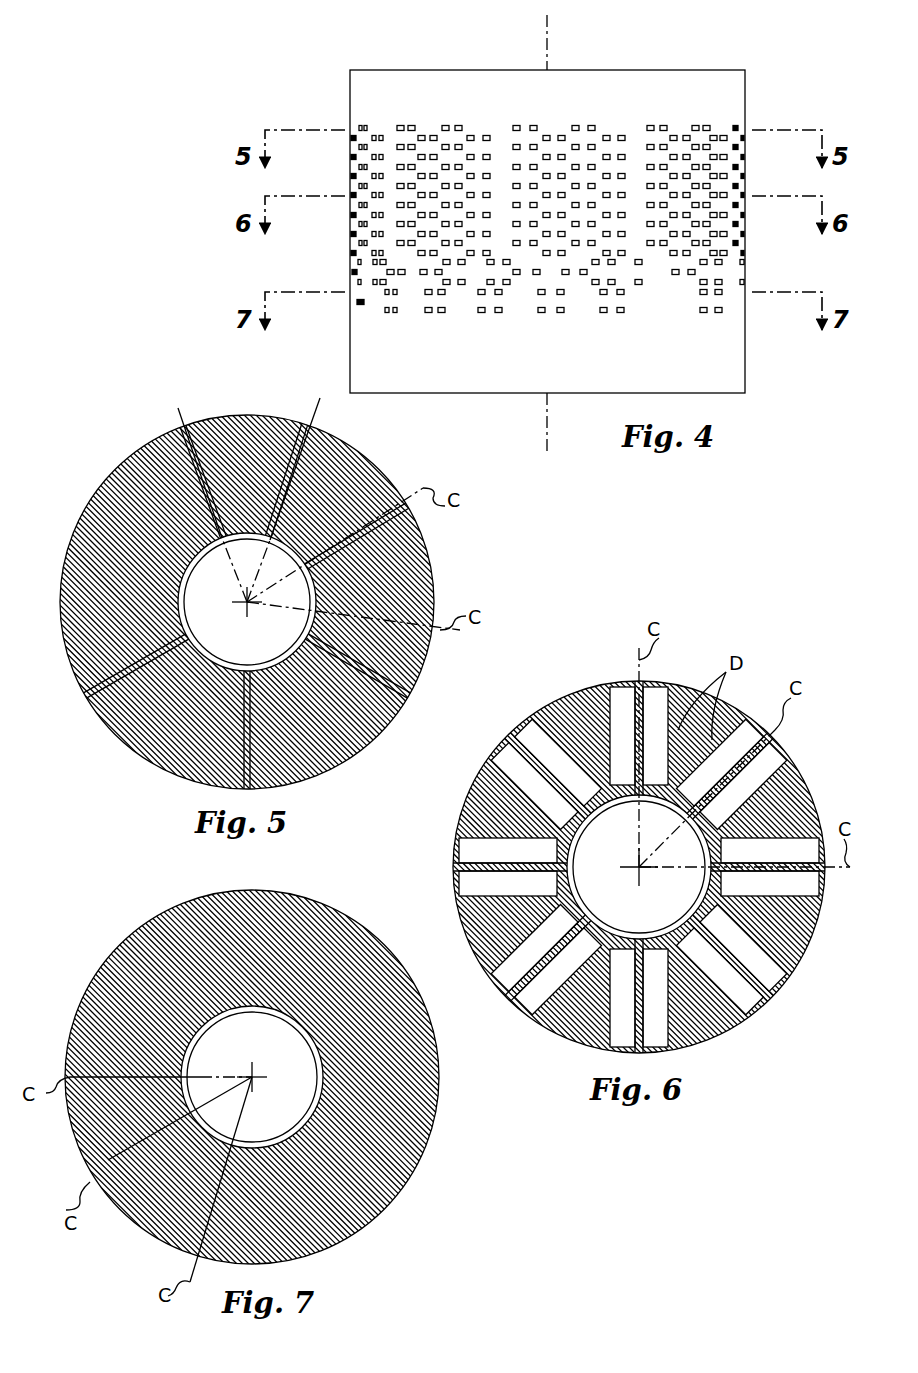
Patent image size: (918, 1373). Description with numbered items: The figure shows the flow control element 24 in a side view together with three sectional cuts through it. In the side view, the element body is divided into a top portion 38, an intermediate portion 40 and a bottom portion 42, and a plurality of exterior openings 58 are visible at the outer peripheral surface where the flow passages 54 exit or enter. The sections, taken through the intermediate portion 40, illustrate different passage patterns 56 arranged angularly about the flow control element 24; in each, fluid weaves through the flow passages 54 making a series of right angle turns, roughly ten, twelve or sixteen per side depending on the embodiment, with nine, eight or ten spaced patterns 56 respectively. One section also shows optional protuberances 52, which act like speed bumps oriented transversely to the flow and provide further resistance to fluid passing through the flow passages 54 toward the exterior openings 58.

In FIG. 4, the flow control element 24 is at (770, 66).
In FIG. 4, the top portion 38 is at (346, 70).
In FIG. 4, the intermediate portion 40 is at (346, 127).
In FIG. 4, the bottom portion 42 is at (346, 317).
In FIG. 6, the protuberances 52 is at (790, 925).
In FIG. 5, the flow passages 54 is at (168, 455).
In FIG. 6, the flow passages 54 is at (722, 1012).
In FIG. 7, the flow passages 54 is at (395, 1125).
In FIG. 5, the passage patterns 56 is at (57, 528).
In FIG. 6, the passage patterns 56 is at (486, 745).
In FIG. 7, the passage patterns 56 is at (242, 884).
In FIG. 4, the exterior openings 58 is at (456, 173).